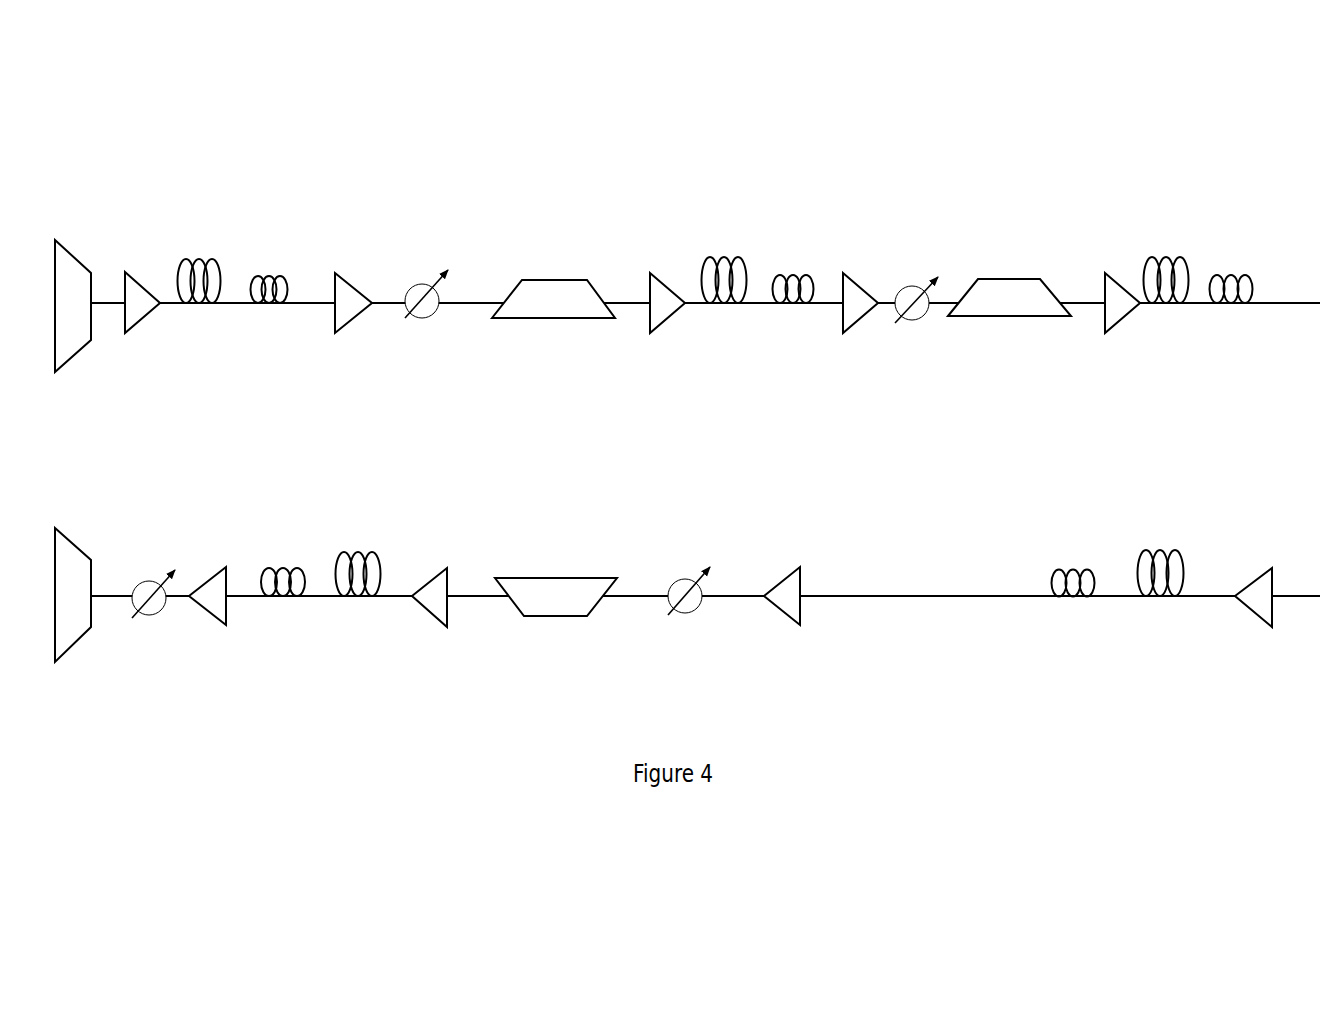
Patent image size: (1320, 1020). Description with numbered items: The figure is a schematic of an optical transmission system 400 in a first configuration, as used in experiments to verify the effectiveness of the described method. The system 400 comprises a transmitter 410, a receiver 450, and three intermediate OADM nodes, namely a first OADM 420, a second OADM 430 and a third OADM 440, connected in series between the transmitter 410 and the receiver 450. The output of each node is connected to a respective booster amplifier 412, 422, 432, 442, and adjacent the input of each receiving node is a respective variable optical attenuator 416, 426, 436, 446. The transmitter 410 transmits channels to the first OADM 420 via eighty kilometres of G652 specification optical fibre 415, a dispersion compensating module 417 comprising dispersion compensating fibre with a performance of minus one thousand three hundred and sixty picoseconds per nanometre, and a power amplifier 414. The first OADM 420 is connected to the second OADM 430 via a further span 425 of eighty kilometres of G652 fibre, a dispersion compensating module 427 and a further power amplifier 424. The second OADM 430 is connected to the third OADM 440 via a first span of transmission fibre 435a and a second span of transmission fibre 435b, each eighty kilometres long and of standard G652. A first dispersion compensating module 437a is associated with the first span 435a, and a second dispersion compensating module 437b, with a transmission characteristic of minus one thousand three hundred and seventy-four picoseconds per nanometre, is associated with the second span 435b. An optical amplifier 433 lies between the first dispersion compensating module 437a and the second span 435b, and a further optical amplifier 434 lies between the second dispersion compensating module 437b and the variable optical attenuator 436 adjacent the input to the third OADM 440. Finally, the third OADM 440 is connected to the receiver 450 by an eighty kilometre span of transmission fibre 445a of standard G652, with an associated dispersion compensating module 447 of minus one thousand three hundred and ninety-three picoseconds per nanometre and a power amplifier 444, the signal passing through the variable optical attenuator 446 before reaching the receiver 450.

The optical transmission system 400 is at (1106, 141).
The transmitter 410 is at (73, 333).
The booster amplifier 412 is at (145, 303).
The power amplifier 414 is at (355, 318).
The G652 specification optical fibre 415 is at (187, 241).
The variable optical attenuator 416 is at (412, 278).
The dispersion compensating module 417 is at (261, 267).
The first OADM 420 is at (548, 302).
The booster amplifier 422 is at (655, 298).
The power amplifier 424 is at (858, 310).
The further span 425 is at (732, 315).
The variable optical attenuator 426 is at (900, 280).
The fiber coil 427 is at (792, 268).
The second OADM 430 is at (1012, 297).
The booster amplifier 432 is at (1120, 303).
The optical amplifier 433 is at (1257, 596).
The further optical amplifier 434 is at (787, 597).
The first span of transmission fibre 435a is at (1162, 242).
The second span of transmission fibre 435b is at (1162, 542).
The variable optical attenuator 436 is at (679, 565).
The first dispersion compensating module 437a is at (1237, 260).
The second dispersion compensating module 437b is at (1068, 560).
The third OADM 440 is at (562, 597).
The booster amplifier 442 is at (431, 597).
The power amplifier 444 is at (206, 597).
The transmission fibre 445a is at (356, 540).
The variable optical attenuator 446 is at (149, 578).
The dispersion compensating module 447 is at (280, 560).
The receiver 450 is at (73, 633).